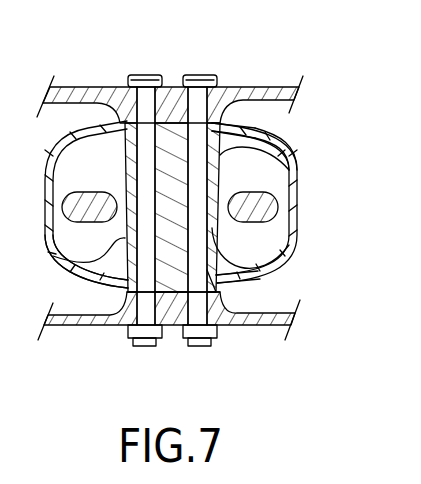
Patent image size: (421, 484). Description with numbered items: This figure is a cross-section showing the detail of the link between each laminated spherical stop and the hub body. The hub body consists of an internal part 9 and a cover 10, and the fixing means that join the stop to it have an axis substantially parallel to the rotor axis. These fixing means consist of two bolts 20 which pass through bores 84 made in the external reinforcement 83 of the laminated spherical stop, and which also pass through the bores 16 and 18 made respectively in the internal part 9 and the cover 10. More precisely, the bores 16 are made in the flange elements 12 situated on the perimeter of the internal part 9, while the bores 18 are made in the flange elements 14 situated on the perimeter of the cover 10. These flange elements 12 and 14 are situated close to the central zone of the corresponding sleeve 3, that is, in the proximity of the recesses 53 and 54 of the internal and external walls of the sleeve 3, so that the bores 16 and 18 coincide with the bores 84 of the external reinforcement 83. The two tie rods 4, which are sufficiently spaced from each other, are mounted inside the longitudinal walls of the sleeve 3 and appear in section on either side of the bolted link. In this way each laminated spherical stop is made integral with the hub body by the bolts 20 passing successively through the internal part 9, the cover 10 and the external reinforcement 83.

The sleeve 3 is at (300, 181).
The tie rod 4 is at (70, 196).
The internal part 9 is at (62, 326).
The cover 10 is at (52, 74).
The flange element 12 is at (172, 310).
The flange element 14 is at (172, 103).
The bore 16 is at (227, 303).
The bore 18 is at (232, 126).
The bolt 20 is at (156, 75).
The recess 53 is at (230, 289).
The recess 54 is at (245, 125).
The external reinforcement 83 is at (292, 157).
The bore 84 is at (50, 256).